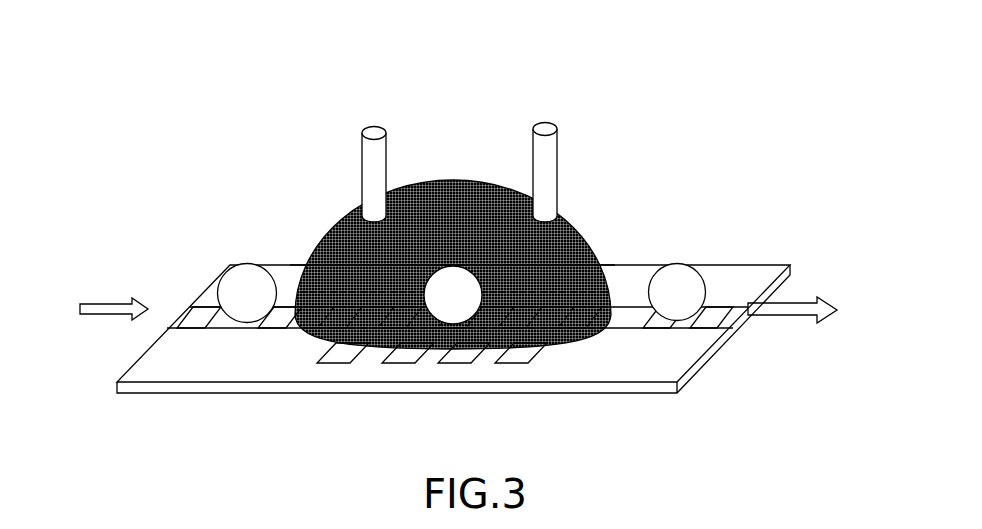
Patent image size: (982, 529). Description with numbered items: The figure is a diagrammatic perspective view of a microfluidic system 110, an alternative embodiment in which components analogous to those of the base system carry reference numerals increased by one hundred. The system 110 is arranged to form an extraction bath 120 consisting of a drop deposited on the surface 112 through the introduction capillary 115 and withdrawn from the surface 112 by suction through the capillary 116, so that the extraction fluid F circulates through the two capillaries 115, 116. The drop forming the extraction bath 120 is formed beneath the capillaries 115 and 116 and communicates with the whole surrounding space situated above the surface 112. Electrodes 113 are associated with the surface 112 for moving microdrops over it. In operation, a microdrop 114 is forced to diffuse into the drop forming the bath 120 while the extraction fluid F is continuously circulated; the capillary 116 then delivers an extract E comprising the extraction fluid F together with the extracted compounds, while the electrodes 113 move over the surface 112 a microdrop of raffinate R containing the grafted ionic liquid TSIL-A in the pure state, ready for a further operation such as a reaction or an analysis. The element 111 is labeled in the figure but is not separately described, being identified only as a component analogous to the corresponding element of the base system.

The microfluidic system 110 is at (431, 386).
The substrate 111 is at (126, 396).
The surface 112 is at (219, 363).
The electrodes 113 is at (200, 305).
The microdrop 114 is at (240, 262).
The introduction capillary 115 is at (393, 140).
The capillary 116 is at (530, 138).
The extraction bath 120 is at (599, 254).
The extraction fluid F is at (363, 127).
The extract E is at (556, 112).
The raffinate R is at (690, 325).